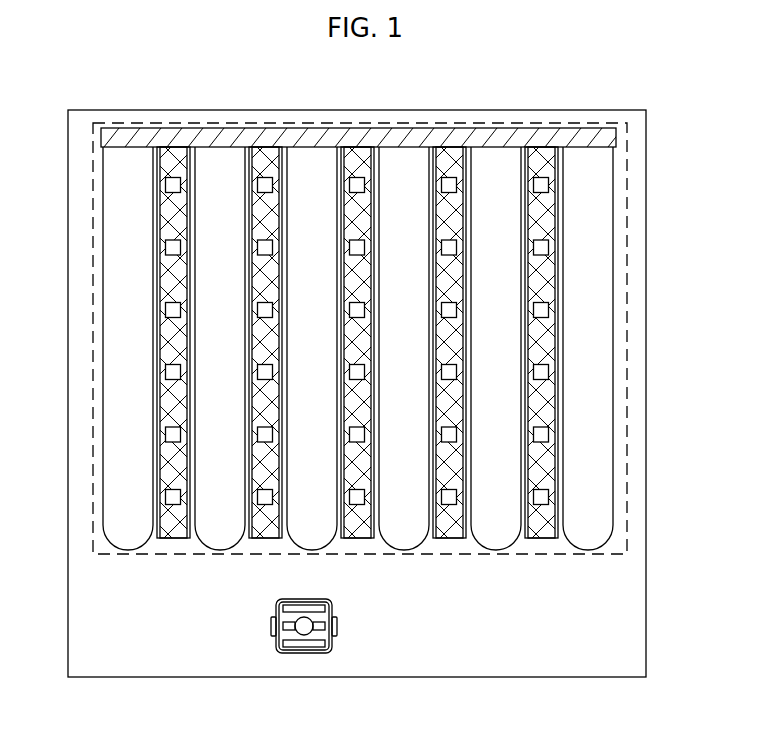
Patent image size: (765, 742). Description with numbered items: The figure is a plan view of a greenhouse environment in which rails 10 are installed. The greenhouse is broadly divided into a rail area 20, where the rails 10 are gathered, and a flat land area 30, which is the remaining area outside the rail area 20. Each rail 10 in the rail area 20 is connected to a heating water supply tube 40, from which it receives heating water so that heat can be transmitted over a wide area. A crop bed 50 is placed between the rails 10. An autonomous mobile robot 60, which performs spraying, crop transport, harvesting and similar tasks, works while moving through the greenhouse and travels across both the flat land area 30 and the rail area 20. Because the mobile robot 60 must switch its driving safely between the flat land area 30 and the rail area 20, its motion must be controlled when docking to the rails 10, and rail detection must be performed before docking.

The rail 10 is at (103, 438).
The rail area 20 is at (628, 250).
The flat land area 30 is at (612, 614).
The heating water supply tube 40 is at (352, 137).
The crop bed 50 is at (172, 155).
The autonomous mobile robot 60 is at (305, 653).